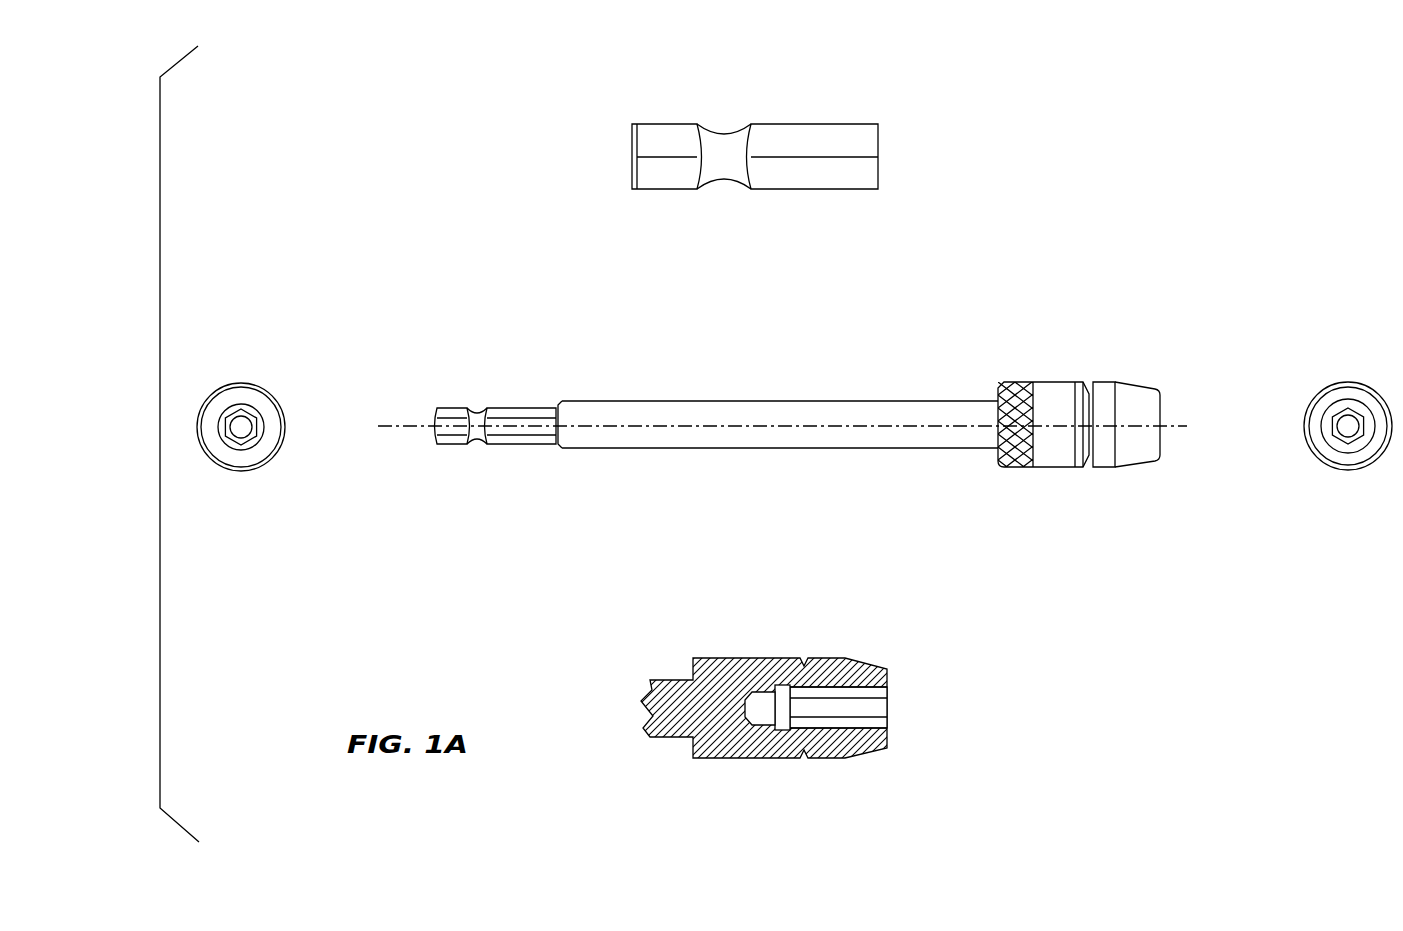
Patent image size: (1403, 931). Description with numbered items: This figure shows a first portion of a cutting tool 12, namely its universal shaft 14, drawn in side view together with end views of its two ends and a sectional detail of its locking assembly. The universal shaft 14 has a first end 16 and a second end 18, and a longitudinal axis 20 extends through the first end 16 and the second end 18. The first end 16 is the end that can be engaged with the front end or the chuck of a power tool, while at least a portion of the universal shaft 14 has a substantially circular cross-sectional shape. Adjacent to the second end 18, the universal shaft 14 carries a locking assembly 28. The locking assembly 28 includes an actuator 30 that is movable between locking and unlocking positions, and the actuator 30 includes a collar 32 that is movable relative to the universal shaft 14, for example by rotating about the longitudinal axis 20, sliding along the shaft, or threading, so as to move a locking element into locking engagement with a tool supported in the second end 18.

The cutting tool 12 is at (966, 536).
The universal shaft 14 is at (821, 408).
The first end 16 is at (667, 212).
The second end 18 is at (1242, 436).
The longitudinal axis 20 is at (401, 422).
The locking assembly 28 is at (865, 536).
The actuator 30 is at (1103, 470).
The collar 32 is at (1042, 380).